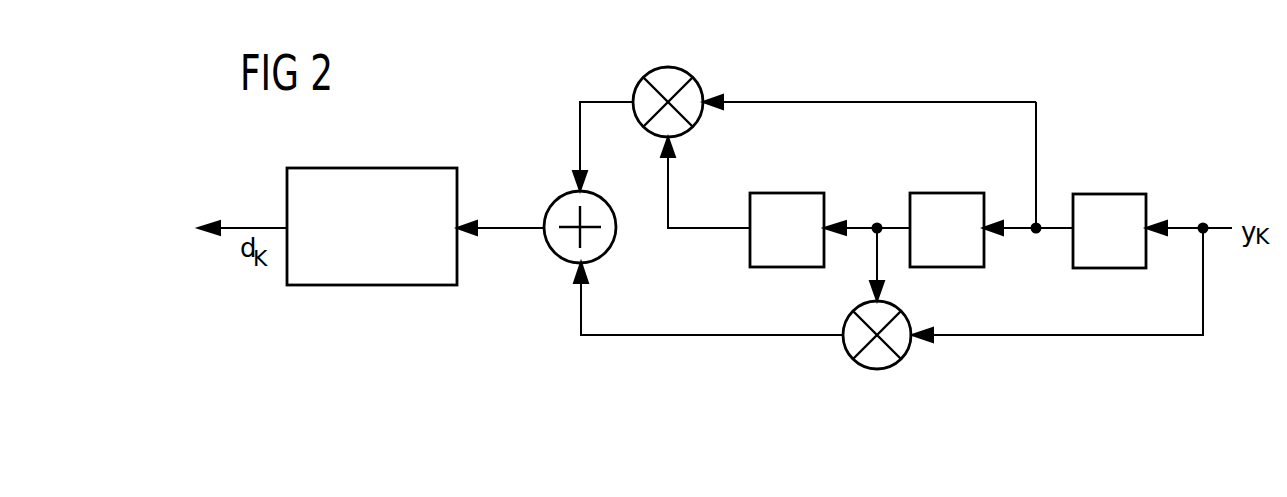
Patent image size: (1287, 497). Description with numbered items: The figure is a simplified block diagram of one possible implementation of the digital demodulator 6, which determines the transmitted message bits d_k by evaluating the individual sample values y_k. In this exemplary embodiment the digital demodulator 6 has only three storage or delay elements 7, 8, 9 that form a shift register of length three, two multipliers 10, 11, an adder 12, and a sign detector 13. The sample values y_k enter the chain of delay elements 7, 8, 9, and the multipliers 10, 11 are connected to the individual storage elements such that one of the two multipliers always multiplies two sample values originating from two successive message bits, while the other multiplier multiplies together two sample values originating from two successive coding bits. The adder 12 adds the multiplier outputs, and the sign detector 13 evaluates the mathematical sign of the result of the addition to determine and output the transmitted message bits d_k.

The digital demodulator 6 is at (1086, 108).
The storage or delay element 7 is at (1108, 194).
The storage or delay element 8 is at (948, 193).
The storage or delay element 9 is at (787, 193).
The multiplier 10 is at (910, 320).
The multiplier 11 is at (702, 90).
The adder 12 is at (552, 200).
The sign detector 13 is at (419, 168).